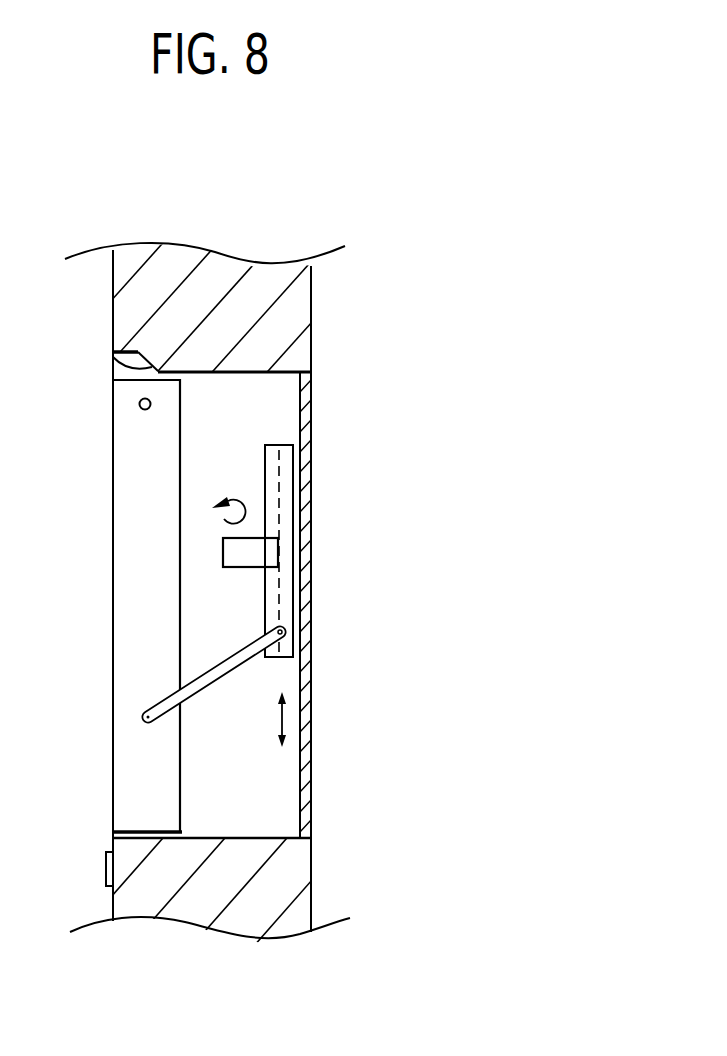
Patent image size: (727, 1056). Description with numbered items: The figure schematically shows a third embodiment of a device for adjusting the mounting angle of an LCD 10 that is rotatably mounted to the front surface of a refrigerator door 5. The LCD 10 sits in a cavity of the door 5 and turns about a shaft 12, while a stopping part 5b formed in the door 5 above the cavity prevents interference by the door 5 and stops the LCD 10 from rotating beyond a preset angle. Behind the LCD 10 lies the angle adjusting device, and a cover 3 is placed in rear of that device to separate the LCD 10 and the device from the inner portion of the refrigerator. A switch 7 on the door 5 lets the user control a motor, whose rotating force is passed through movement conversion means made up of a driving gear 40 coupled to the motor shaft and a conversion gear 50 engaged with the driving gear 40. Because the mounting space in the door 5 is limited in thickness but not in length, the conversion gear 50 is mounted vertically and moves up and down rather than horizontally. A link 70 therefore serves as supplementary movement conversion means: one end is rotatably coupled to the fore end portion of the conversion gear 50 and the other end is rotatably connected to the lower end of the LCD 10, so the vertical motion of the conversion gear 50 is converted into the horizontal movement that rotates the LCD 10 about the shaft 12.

The cover 3 is at (313, 770).
The refrigerator door 5 is at (296, 327).
The stopping part 5b is at (113, 360).
The switch 7 is at (106, 868).
The LCD 10 is at (142, 573).
The shaft 12 is at (139, 405).
The driving gear 40 is at (265, 548).
The conversion gear 50 is at (285, 490).
The link 70 is at (160, 704).